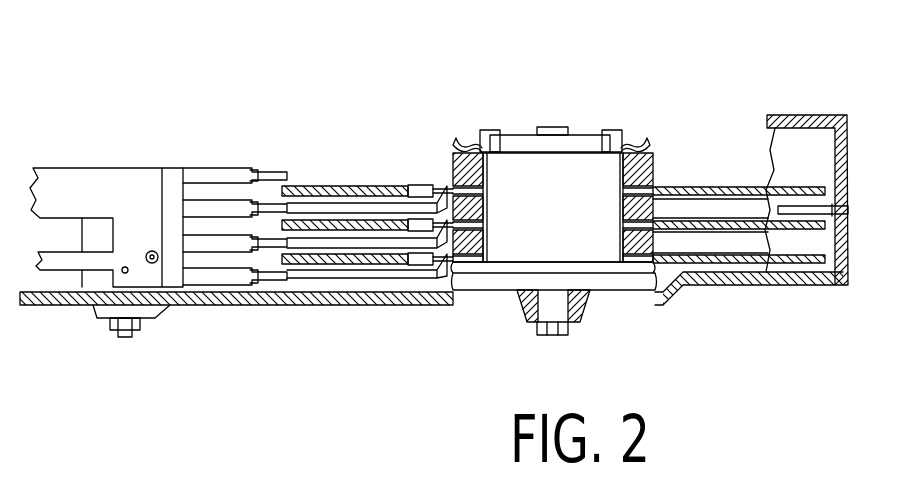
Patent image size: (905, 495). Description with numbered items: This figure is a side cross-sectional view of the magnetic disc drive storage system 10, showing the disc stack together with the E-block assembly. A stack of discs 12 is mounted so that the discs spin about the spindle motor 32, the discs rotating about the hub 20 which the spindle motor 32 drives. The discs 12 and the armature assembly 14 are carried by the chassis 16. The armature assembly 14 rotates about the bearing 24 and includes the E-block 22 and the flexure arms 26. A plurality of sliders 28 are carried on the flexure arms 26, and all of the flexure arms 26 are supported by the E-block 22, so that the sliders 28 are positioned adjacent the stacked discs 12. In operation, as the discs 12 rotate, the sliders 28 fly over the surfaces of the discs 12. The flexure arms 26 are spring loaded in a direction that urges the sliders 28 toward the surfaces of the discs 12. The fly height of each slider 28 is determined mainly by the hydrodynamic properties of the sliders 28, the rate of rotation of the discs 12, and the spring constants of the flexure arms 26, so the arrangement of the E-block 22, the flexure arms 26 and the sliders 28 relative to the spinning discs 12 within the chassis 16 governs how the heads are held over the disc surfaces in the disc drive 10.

The magnetic disc drive storage system 10 is at (768, 96).
The disc 12 is at (682, 183).
The armature assembly 14 is at (166, 133).
The chassis 16 is at (843, 286).
The hub 20 is at (468, 143).
The E-block 22 is at (217, 167).
The bearing 24 is at (153, 327).
The flexure arm 26 is at (338, 188).
The slider 28 is at (443, 178).
The spindle motor 32 is at (573, 170).